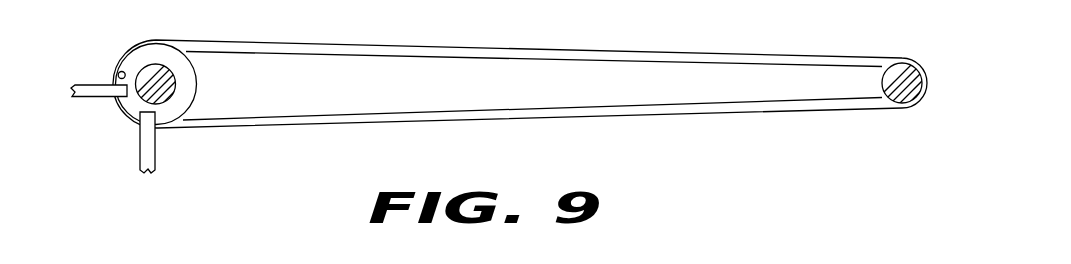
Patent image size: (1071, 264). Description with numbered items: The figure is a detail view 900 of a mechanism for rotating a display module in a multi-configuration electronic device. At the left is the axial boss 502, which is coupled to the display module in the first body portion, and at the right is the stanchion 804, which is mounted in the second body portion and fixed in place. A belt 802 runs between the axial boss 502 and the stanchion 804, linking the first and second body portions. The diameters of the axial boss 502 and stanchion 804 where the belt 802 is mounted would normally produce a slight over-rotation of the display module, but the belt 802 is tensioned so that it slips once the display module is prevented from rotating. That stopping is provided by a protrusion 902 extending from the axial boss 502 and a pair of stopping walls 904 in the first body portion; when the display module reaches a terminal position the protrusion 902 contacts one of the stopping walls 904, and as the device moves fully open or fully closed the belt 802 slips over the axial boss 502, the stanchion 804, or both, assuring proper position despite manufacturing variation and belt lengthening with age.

The detail view 900 is at (491, 92).
The belt 802 is at (530, 47).
The axial boss 502 is at (196, 83).
The stanchion 804 is at (901, 66).
The stopping walls 904 is at (87, 98).
The protrusion 902 is at (121, 71).